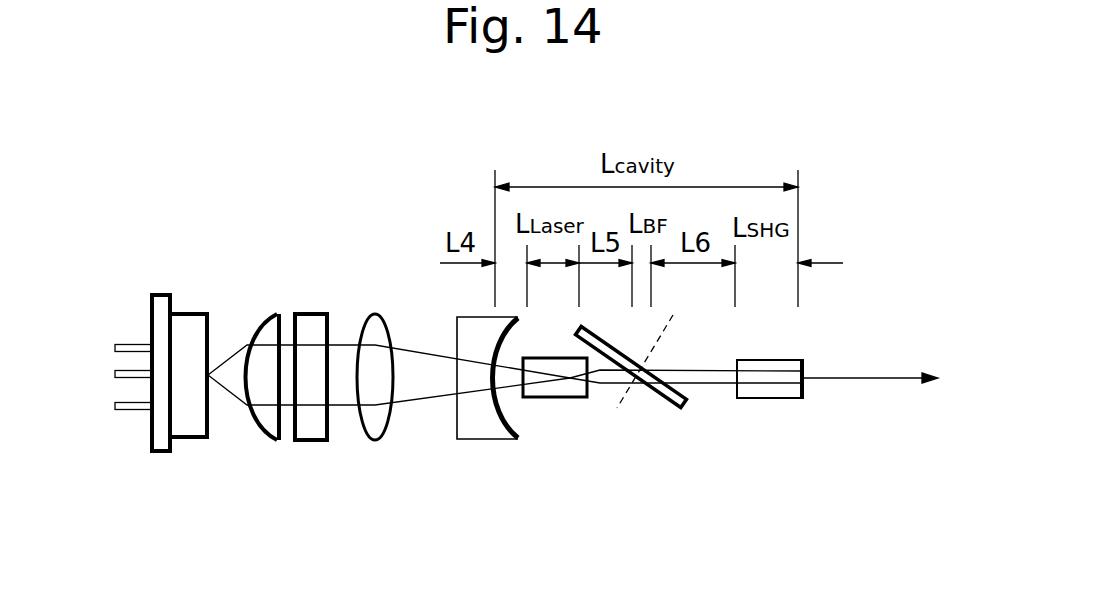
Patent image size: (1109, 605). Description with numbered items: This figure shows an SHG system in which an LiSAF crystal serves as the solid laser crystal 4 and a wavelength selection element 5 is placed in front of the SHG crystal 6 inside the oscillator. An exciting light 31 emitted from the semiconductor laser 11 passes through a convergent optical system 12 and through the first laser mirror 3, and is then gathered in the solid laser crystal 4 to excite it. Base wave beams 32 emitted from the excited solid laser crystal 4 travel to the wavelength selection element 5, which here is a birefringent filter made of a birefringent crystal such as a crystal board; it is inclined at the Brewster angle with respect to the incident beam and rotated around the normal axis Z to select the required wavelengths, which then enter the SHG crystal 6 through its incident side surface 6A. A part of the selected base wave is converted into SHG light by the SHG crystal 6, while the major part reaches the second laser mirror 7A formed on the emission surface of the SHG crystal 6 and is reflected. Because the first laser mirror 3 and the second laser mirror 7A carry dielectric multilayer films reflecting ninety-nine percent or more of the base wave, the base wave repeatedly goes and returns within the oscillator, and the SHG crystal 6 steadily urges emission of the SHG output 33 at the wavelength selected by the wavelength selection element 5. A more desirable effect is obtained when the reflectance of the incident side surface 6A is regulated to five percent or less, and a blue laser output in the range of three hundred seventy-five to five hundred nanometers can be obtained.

The semiconductor laser 11 is at (193, 325).
The convergent optical system 12 is at (238, 295).
The exciting light 31 is at (417, 392).
The first laser mirror 3 is at (480, 433).
The solid laser crystal 4 is at (558, 392).
The base wave beams 32 is at (614, 380).
The wavelength selection element 5 is at (667, 398).
The SHG crystal 6 is at (773, 395).
The incident side surface 6A is at (728, 398).
The second laser mirror 7A is at (805, 370).
The SHG output 33 is at (863, 383).
The normal axis Z is at (668, 337).